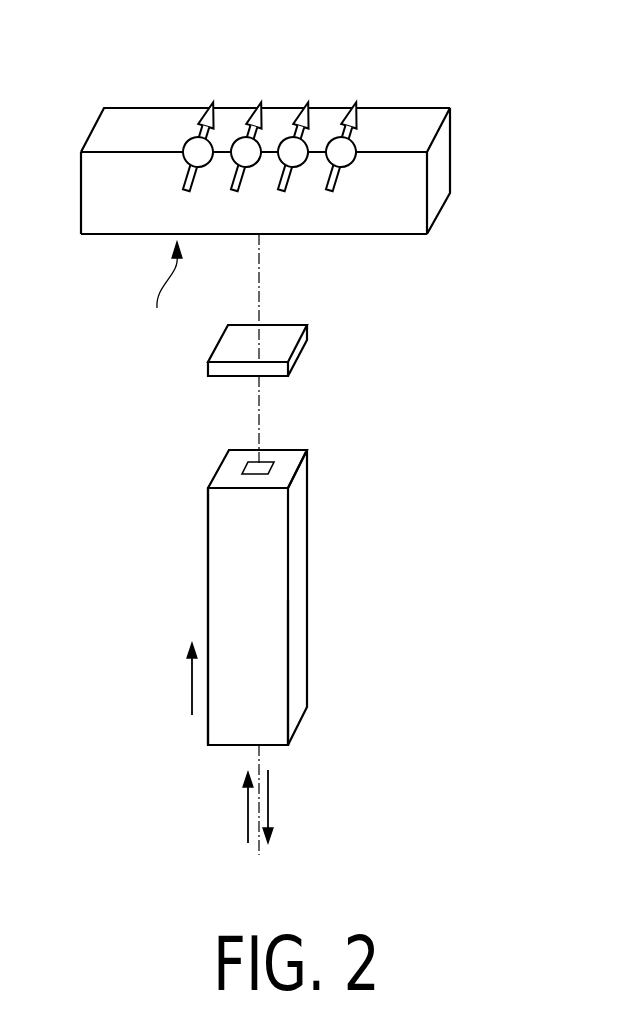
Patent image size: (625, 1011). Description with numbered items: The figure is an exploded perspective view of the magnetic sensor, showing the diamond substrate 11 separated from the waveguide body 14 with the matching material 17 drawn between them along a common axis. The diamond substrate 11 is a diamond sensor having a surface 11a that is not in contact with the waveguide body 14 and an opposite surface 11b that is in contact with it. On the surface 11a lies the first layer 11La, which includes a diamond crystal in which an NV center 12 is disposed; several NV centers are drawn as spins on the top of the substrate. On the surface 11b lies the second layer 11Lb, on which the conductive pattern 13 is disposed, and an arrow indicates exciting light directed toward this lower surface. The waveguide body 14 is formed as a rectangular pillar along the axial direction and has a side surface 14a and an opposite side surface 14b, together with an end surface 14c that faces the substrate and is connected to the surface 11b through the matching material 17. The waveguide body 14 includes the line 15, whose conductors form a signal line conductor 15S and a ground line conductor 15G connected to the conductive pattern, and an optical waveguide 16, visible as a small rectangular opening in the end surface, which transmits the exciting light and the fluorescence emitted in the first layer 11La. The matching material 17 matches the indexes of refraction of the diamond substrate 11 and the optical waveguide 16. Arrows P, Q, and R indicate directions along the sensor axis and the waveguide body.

The diamond substrate 11 is at (443, 176).
The first layer 11La is at (125, 123).
The surface 11a is at (408, 132).
The second layer 11Lb is at (113, 234).
The surface 11b is at (401, 234).
The NV center 12 is at (213, 100).
The conductive pattern 13 is at (162, 287).
The waveguide body 14 is at (255, 569).
The side surface 14a is at (208, 595).
The side surface 14b is at (300, 590).
The top surface of optical element 14c is at (230, 482).
The line 15 is at (255, 597).
The conductor 15S is at (208, 540).
The conductor 15G is at (300, 540).
The optical waveguide 16 is at (267, 457).
The matching material 17 is at (303, 338).
The direction P is at (192, 670).
The direction Q is at (258, 815).
The direction R is at (258, 815).